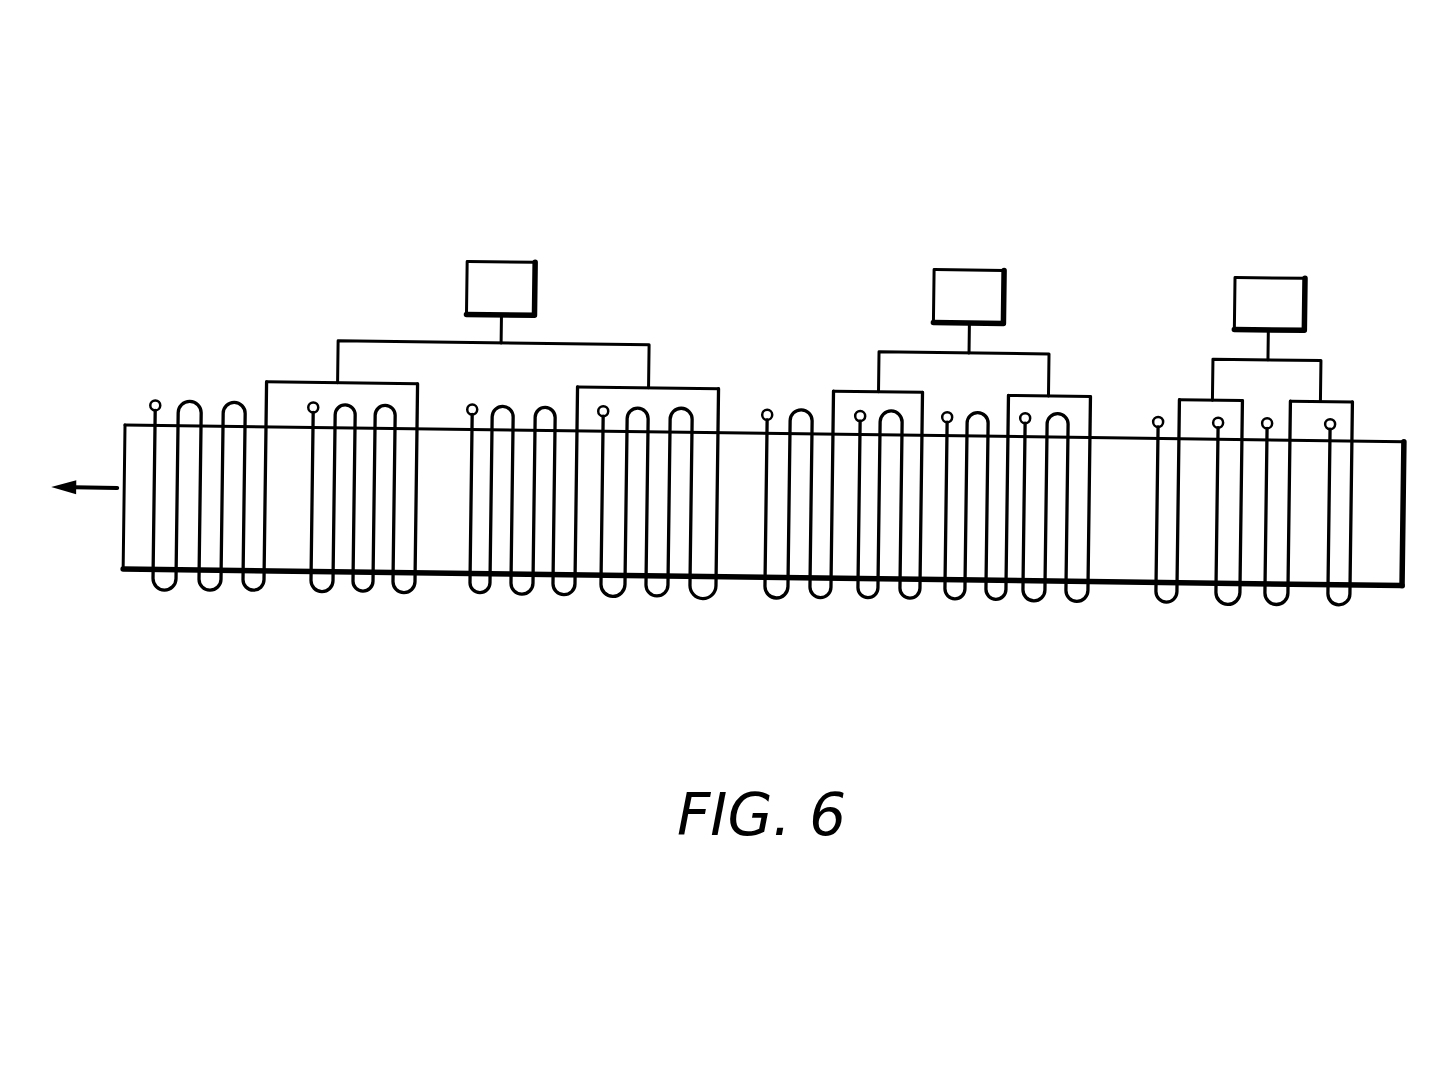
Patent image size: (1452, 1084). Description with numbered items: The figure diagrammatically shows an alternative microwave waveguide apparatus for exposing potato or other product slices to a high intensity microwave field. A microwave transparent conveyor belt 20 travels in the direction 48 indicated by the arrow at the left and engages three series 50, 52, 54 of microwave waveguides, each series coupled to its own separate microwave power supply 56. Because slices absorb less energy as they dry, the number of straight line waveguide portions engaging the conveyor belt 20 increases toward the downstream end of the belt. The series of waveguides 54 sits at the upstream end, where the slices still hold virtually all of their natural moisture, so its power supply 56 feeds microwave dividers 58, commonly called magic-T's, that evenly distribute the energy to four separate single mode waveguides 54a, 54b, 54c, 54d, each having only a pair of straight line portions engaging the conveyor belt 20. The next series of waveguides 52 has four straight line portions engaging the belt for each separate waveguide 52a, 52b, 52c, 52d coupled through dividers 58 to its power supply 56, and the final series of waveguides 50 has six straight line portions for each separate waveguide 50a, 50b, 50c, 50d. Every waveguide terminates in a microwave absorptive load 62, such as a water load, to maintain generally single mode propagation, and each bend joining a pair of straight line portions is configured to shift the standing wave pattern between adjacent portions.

The microwave transparent conveyor belt 20 is at (1393, 493).
The direction of travel 48 is at (98, 488).
The waveguide series 50 is at (143, 445).
The single mode waveguide 50a is at (600, 593).
The single mode waveguide 50b is at (468, 593).
The single mode waveguide 50c is at (423, 593).
The single mode waveguide 50d is at (152, 593).
The waveguide series 52 is at (756, 466).
The single mode waveguide 52a is at (1022, 593).
The single mode waveguide 52b is at (940, 593).
The single mode waveguide 52c is at (855, 593).
The single mode waveguide 52d is at (762, 593).
The waveguide series 54 is at (1144, 477).
The single mode waveguide 54a is at (1341, 590).
The single mode waveguide 54b is at (1278, 590).
The single mode waveguide 54c is at (1230, 590).
The single mode waveguide 54d is at (1168, 590).
The microwave power supply 56 is at (490, 257).
The microwave divider 58 is at (337, 375).
The microwave absorptive load 62 is at (155, 400).